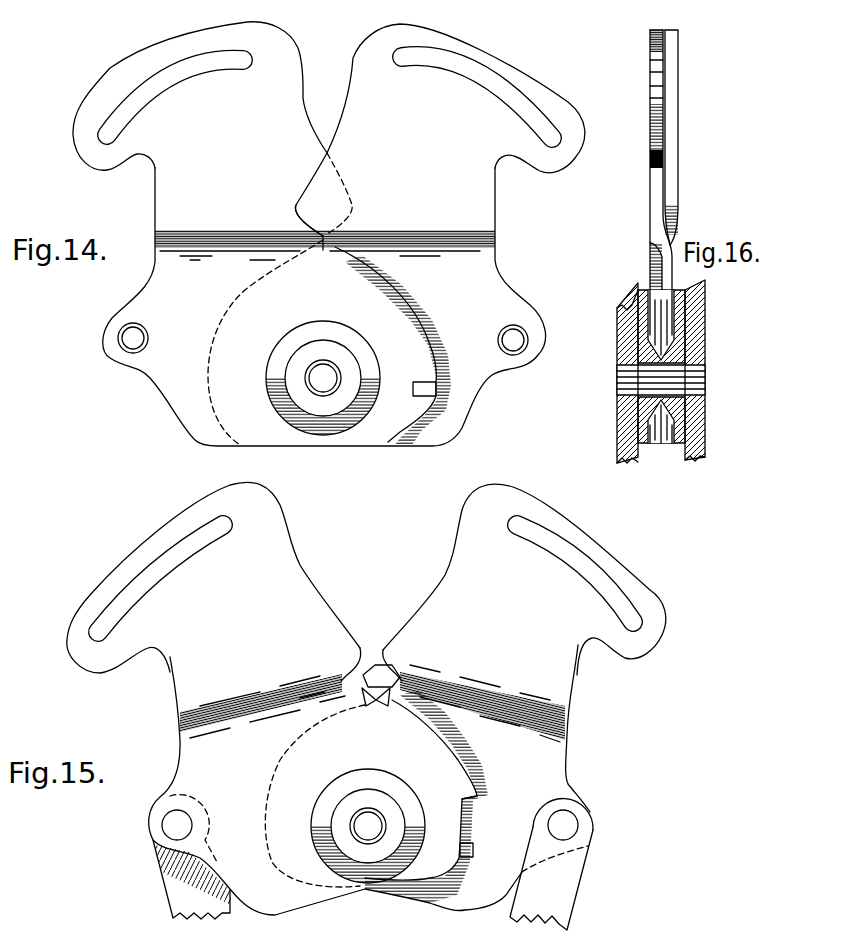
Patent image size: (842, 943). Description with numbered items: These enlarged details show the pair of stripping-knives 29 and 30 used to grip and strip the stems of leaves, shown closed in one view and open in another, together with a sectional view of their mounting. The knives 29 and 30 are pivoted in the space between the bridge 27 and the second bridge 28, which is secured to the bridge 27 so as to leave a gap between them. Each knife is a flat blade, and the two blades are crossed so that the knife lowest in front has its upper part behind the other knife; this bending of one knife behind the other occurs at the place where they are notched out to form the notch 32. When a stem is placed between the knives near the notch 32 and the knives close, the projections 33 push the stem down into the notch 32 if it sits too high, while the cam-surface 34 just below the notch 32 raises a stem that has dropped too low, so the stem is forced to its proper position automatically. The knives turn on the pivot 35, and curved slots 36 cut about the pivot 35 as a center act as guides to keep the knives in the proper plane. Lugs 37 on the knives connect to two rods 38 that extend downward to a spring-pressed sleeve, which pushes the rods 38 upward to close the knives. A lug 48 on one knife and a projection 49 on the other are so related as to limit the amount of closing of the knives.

In FIG. 16, the bridge 27 is at (636, 376).
In FIG. 16, the second bridge 28 is at (706, 420).
In FIG. 14, the stripping-knife 29 is at (296, 58).
In FIG. 16, the stripping-knife 29 is at (651, 187).
In FIG. 15, the stripping-knife 29 is at (287, 553).
In FIG. 14, the stripping-knife 30 is at (439, 130).
In FIG. 16, the stripping-knife 30 is at (676, 170).
In FIG. 15, the stripping-knife 30 is at (456, 553).
In FIG. 14, the notch 32 is at (322, 250).
In FIG. 15, the notch 32 is at (400, 677).
In FIG. 14, the projections 33 is at (295, 206).
In FIG. 15, the projections 33 is at (361, 641).
In FIG. 15, the cam-surface 34 is at (377, 708).
In FIG. 14, the pivot 35 is at (318, 378).
In FIG. 16, the pivot 35 is at (706, 378).
In FIG. 15, the pivot 35 is at (362, 826).
In FIG. 14, the curved slots 36 is at (152, 97).
In FIG. 15, the curved slots 36 is at (137, 580).
In FIG. 14, the lugs 37 is at (118, 362).
In FIG. 15, the lugs 37 is at (150, 826).
In FIG. 15, the rods 38 is at (572, 890).
In FIG. 14, the lug 48 is at (430, 408).
In FIG. 15, the lug 48 is at (474, 858).
In FIG. 15, the projection 49 is at (480, 803).